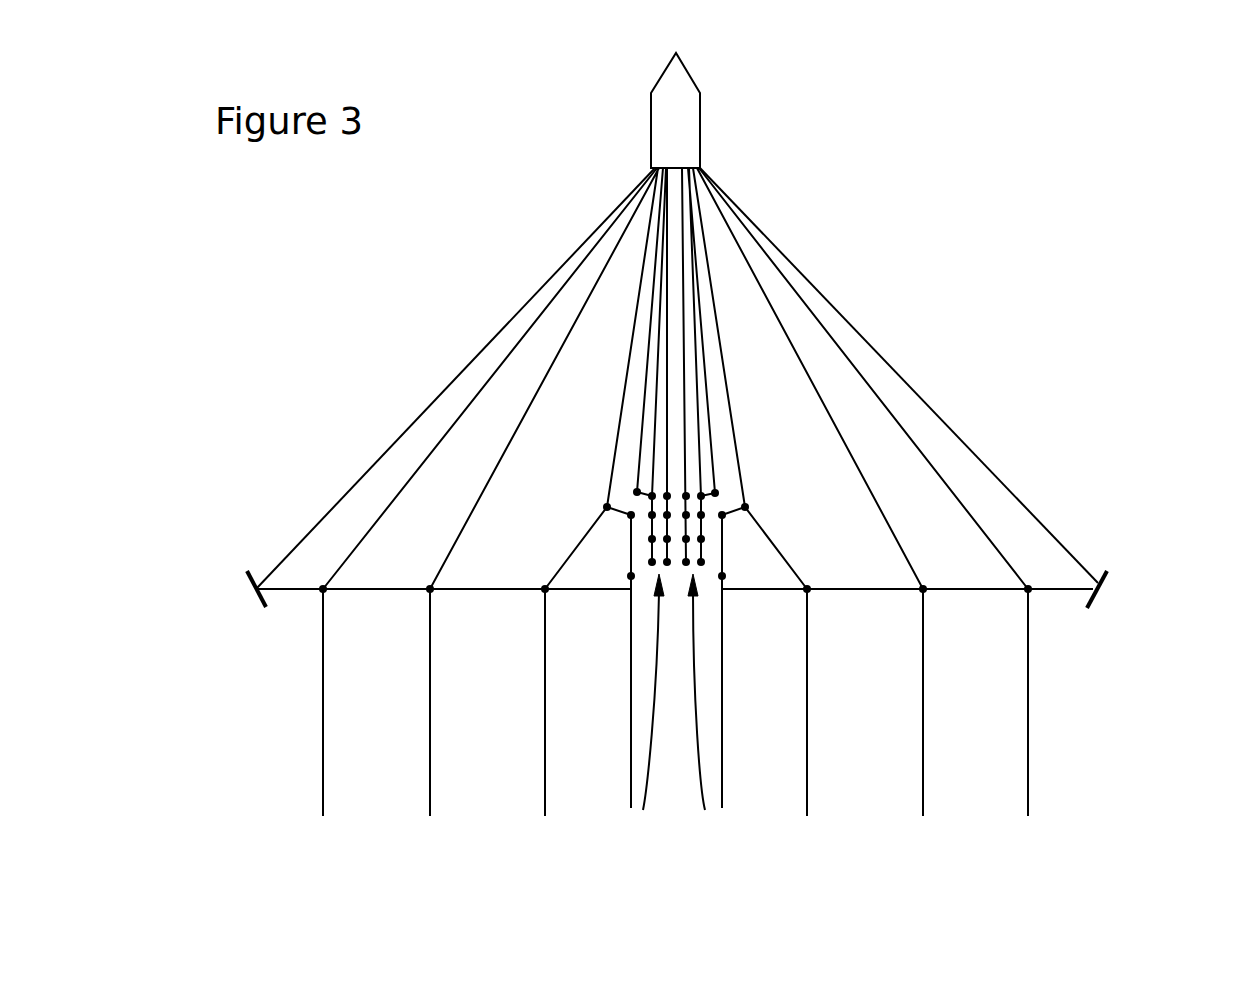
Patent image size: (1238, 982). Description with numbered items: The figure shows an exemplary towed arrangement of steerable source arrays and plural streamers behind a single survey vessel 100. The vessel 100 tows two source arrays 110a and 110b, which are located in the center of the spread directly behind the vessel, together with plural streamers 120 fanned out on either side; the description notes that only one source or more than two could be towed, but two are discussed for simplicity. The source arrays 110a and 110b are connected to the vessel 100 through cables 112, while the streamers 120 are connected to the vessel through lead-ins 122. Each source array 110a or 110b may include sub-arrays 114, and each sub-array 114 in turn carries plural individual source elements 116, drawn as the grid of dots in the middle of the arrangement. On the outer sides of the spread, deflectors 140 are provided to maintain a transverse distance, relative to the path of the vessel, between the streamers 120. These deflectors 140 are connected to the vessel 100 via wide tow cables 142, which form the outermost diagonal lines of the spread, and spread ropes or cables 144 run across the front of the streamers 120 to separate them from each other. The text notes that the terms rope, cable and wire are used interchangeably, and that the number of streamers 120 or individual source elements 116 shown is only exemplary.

The vessel 100 is at (683, 113).
The source array 110a is at (635, 707).
The source array 110b is at (726, 705).
The cables 112 is at (670, 333).
The sub-arrays 114 is at (705, 548).
The individual source elements 116 is at (687, 495).
The streamers 120 is at (322, 714).
The lead-ins 122 is at (480, 393).
The deflectors 140 is at (250, 580).
The wide tow cables 142 is at (397, 438).
The spread ropes 144 is at (488, 593).